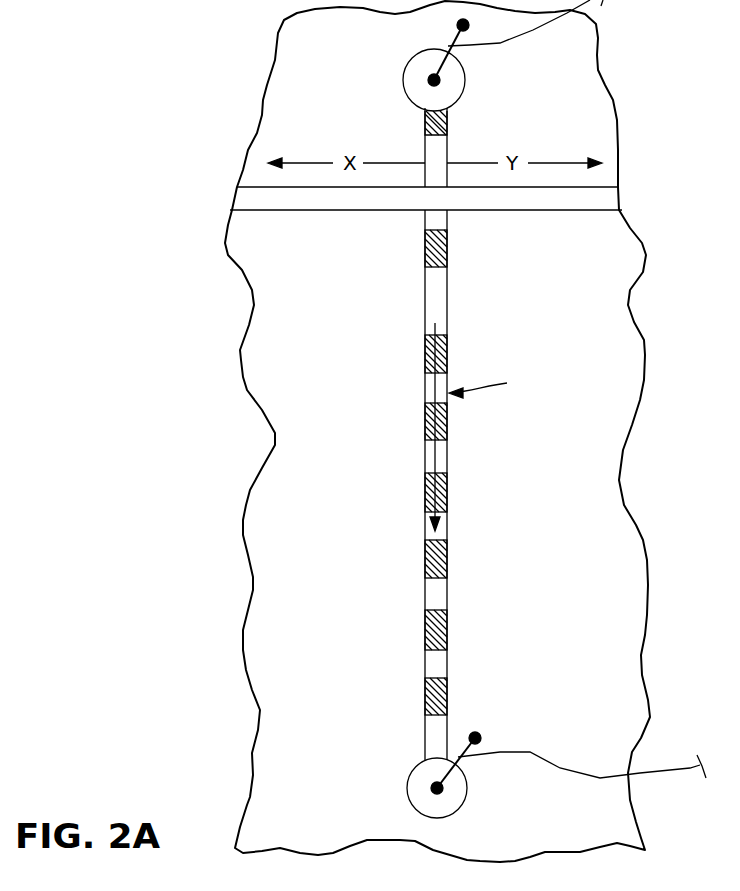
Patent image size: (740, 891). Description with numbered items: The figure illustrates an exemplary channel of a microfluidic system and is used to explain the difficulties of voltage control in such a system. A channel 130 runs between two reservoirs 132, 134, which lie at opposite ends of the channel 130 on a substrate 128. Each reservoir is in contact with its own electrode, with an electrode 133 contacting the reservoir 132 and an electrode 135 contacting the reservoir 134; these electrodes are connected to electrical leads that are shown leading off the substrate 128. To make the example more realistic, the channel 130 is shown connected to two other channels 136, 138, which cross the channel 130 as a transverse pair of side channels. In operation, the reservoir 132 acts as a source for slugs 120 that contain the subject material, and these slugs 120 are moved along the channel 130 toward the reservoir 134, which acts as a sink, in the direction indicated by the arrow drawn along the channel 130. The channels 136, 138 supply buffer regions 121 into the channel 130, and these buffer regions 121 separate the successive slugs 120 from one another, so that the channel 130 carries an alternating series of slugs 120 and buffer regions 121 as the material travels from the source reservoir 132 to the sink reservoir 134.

The slugs 120 is at (430, 97).
The buffer regions 121 is at (442, 386).
The substrate 128 is at (311, 831).
The channel 130 is at (487, 427).
The reservoir 132 is at (404, 80).
The electrode 133 is at (448, 46).
The reservoir 134 is at (453, 807).
The electrode 135 is at (455, 775).
The channel 136 is at (337, 203).
The channel 138 is at (523, 200).